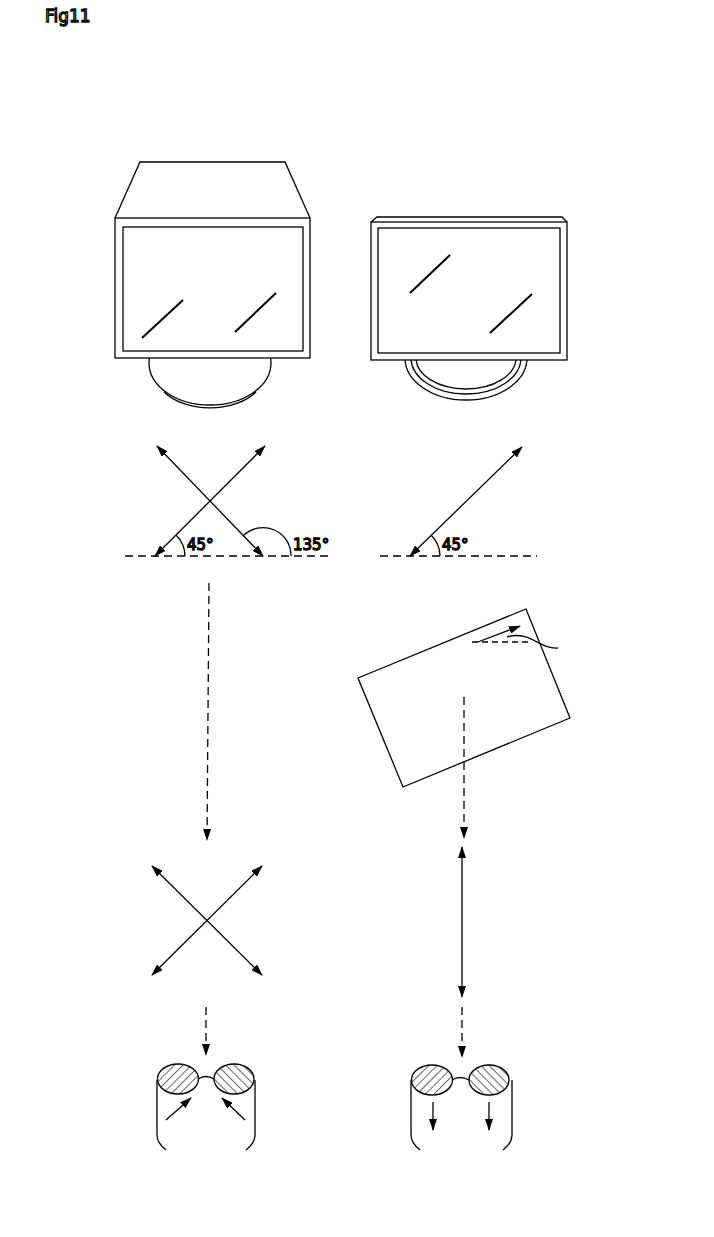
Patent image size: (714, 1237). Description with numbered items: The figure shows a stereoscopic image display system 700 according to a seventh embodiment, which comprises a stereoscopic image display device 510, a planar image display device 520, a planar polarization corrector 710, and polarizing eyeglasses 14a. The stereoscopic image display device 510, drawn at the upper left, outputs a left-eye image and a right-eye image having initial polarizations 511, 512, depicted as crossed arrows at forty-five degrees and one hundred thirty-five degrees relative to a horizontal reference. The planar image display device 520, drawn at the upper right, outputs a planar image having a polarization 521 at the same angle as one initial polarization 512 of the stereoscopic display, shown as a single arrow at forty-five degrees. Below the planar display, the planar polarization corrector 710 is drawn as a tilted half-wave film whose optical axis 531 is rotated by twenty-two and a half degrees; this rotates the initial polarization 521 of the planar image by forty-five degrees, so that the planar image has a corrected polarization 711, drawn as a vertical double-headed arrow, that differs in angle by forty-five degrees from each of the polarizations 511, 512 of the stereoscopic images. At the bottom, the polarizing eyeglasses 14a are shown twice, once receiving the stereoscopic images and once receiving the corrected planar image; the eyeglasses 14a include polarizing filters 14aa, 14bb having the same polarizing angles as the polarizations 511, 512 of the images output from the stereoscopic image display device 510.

The stereoscopic image display system 700 is at (90, 89).
The stereoscopic image display device 510 is at (212, 162).
The planar image display device 520 is at (467, 217).
The initial polarization 511 is at (242, 530).
The initial polarization 512 is at (182, 530).
The polarization of planar image 521 is at (438, 530).
The optical axis of λ/2 film 531 is at (497, 633).
The planar polarization corrector 710 is at (558, 686).
The corrected polarization 711 is at (463, 915).
The polarizing eyeglasses 14a is at (157, 1097).
The polarizing filter 14aa is at (178, 1062).
The polarizing filter 14bb is at (235, 1062).